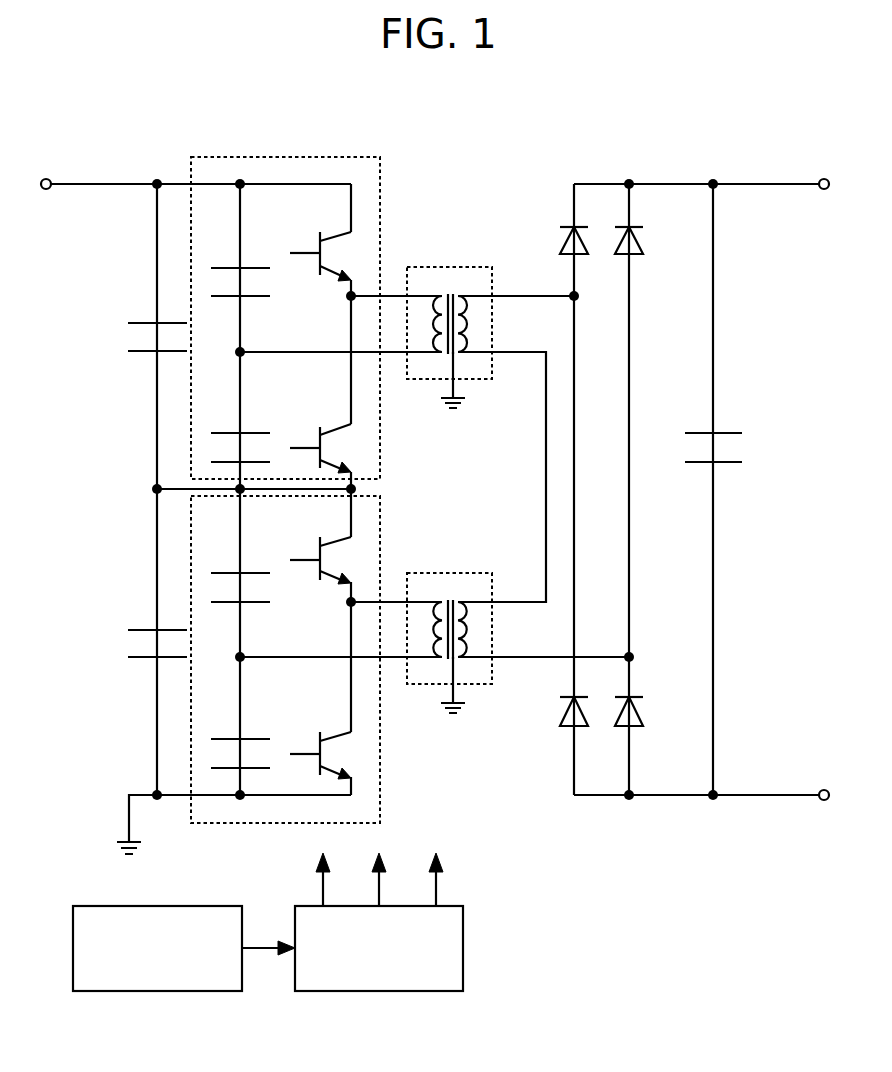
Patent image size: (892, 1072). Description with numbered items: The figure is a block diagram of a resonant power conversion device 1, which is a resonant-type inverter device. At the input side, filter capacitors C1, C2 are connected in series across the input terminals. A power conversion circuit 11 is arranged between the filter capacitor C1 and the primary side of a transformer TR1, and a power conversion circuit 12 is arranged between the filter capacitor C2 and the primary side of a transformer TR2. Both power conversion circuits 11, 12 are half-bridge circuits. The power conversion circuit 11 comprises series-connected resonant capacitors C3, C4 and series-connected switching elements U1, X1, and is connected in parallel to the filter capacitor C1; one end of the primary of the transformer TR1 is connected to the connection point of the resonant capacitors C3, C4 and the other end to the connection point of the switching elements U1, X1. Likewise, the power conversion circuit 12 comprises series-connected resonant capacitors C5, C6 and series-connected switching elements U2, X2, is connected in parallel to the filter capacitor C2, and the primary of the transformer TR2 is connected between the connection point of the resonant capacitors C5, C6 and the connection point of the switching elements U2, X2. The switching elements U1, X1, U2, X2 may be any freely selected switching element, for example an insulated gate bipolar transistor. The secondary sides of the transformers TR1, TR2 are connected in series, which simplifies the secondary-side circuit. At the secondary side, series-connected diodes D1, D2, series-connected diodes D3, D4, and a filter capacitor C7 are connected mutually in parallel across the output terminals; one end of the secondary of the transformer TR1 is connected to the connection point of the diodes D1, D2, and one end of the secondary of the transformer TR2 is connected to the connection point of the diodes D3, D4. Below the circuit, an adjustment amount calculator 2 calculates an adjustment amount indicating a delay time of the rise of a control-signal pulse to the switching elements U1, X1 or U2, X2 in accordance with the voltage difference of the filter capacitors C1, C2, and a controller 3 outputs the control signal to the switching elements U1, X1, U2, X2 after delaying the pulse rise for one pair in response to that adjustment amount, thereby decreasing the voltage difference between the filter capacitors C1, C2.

The resonant power conversion device 1 is at (440, 150).
The adjustment amount calculator 2 is at (190, 906).
The controller 3 is at (335, 991).
The power conversion circuit 11 is at (205, 157).
The power conversion circuit 12 is at (290, 823).
The filter capacitor C1 is at (140, 322).
The filter capacitor C2 is at (140, 629).
The resonant capacitor C3 is at (250, 298).
The resonant capacitor C4 is at (228, 432).
The resonant capacitor C5 is at (250, 604).
The resonant capacitor C6 is at (228, 738).
The filter capacitor C7 is at (730, 432).
The switching element U1 is at (320, 240).
The switching element X1 is at (320, 433).
The switching element U2 is at (320, 545).
The switching element X2 is at (320, 740).
The transformer TR1 is at (442, 267).
The transformer TR2 is at (442, 573).
The diode D1 is at (572, 227).
The diode D2 is at (565, 727).
The diode D3 is at (632, 256).
The diode D4 is at (636, 727).